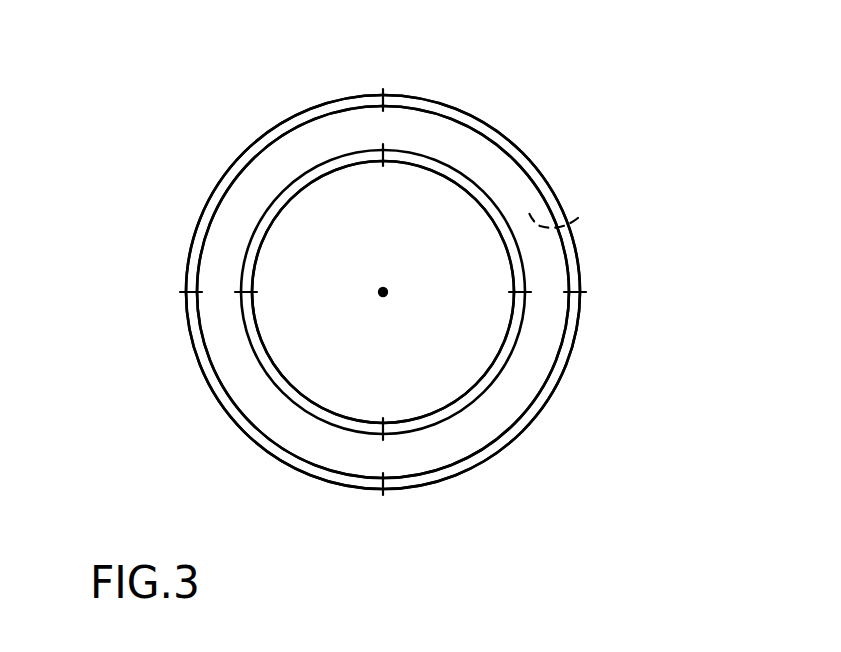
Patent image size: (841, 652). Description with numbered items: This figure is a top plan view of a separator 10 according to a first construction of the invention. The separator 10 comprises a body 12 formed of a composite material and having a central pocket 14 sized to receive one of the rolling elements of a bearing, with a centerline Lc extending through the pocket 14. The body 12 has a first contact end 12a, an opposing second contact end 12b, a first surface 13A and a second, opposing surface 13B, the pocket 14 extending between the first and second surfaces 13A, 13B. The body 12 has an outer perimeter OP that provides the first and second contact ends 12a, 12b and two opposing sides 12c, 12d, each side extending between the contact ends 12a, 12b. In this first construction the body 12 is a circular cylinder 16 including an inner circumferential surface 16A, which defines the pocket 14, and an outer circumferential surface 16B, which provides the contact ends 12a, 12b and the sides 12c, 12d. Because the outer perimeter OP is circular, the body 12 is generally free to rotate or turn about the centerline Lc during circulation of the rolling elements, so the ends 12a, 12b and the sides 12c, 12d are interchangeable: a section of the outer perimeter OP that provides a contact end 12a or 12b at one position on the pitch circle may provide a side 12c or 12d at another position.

The separator 10 is at (172, 77).
The body 12 is at (206, 170).
The first contact end 12a is at (187, 282).
The second contact end 12b is at (583, 286).
The first side 12c is at (402, 488).
The second side 12d is at (402, 95).
The first surface 13A is at (585, 212).
The second surface 13B is at (502, 172).
The central pocket 14 is at (463, 362).
The circular cylinder 16 is at (206, 371).
The inner circumferential surface 16A is at (308, 187).
The outer circumferential surface 16B is at (338, 97).
The centerline Lc is at (388, 288).
The outer perimeter OP is at (516, 454).